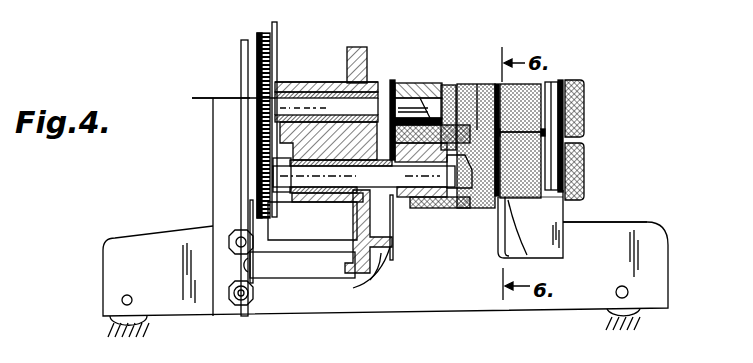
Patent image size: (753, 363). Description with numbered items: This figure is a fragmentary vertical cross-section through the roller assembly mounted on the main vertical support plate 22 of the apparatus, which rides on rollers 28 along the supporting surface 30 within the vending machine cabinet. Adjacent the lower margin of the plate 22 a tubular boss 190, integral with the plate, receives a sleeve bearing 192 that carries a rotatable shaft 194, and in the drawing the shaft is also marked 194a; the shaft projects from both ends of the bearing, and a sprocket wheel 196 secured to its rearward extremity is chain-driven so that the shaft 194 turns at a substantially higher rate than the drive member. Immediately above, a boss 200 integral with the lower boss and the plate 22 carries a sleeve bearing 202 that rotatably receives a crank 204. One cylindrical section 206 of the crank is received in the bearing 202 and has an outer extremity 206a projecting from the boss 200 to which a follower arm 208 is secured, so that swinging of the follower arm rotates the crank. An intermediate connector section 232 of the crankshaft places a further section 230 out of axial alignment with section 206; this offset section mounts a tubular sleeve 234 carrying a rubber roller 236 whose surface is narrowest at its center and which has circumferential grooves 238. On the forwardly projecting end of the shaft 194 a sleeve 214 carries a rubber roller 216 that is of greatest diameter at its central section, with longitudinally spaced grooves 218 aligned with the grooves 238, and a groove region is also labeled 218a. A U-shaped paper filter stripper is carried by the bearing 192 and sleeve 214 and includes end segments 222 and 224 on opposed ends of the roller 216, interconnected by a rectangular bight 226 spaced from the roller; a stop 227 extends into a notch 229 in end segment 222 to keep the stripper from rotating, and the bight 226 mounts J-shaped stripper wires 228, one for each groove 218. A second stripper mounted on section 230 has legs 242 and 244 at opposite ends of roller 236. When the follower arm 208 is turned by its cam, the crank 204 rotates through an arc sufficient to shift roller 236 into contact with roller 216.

The main vertical support plate 22 is at (362, 52).
The rollers 28 is at (634, 312).
The supporting surface 30 is at (367, 336).
The tubular boss 190 is at (307, 197).
The sleeve bearing 192 is at (343, 188).
The rotatable shaft 194 is at (448, 200).
The shaft 194a is at (364, 175).
The sprocket wheel 196 is at (257, 182).
The boss 200 is at (287, 97).
The sleeve bearing 202 is at (372, 82).
The crank 204 is at (459, 84).
The cylindrical section 206 is at (290, 83).
The outer extremity 206a is at (246, 100).
The follower arm 208 is at (277, 25).
The sleeve 214 is at (393, 200).
The rubber roller 216 is at (530, 224).
The grooves 218 is at (520, 165).
The drum section 218a is at (522, 110).
The end segment 222 is at (392, 262).
The end segment 224 is at (558, 162).
The rectangular bight 226 is at (560, 252).
The stop 227 is at (356, 278).
The J-shaped stripper wires 228 is at (497, 250).
The notch 229 is at (393, 254).
The section 230 is at (408, 103).
The intermediate connector section 232 is at (336, 144).
The tubular sleeve 234 is at (322, 111).
The rubber roller 236 is at (533, 83).
The grooves 238 is at (496, 83).
The leg 242 is at (411, 83).
The leg 244 is at (566, 82).